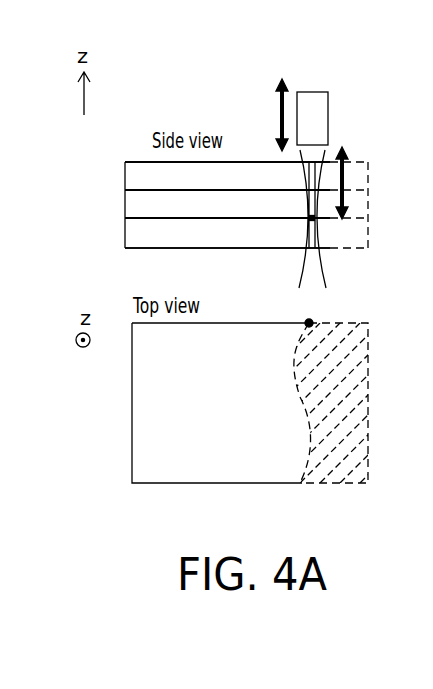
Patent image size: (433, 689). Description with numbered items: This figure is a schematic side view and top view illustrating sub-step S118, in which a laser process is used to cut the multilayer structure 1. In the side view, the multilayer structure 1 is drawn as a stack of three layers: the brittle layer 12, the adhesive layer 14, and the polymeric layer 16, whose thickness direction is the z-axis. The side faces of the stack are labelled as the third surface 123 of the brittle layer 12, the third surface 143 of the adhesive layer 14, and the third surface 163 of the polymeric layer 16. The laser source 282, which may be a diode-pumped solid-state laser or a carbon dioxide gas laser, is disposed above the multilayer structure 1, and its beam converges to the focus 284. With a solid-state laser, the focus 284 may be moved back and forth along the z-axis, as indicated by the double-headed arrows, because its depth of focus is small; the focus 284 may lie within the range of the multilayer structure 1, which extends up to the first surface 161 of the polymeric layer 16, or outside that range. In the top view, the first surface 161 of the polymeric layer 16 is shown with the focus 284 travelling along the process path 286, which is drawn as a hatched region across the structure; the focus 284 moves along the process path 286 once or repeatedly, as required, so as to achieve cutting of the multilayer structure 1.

The multilayer structure 1 is at (35, 142).
The brittle layer 12 is at (128, 245).
The adhesive layer 14 is at (128, 214).
The polymeric layer 16 is at (142, 161).
The third surface 123 is at (120, 237).
The third surface 143 is at (120, 207).
The third surface 163 is at (120, 178).
The first surface 161 is at (190, 418).
The laser source 282 is at (318, 102).
The focus 284 is at (316, 221).
The process path 286 is at (316, 397).
The sub-step S118 is at (137, 107).